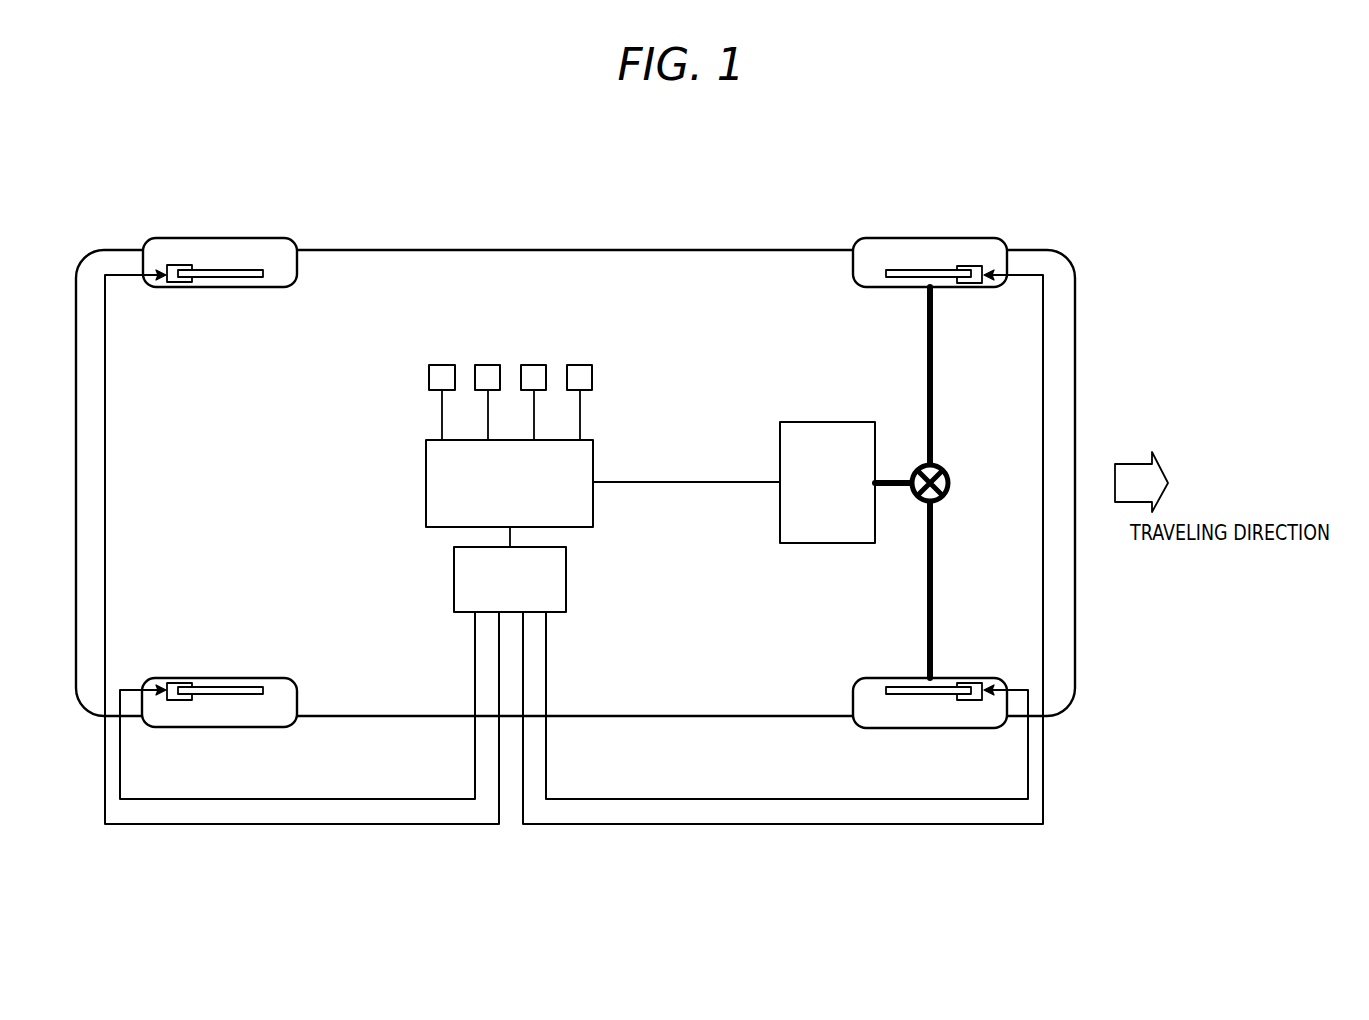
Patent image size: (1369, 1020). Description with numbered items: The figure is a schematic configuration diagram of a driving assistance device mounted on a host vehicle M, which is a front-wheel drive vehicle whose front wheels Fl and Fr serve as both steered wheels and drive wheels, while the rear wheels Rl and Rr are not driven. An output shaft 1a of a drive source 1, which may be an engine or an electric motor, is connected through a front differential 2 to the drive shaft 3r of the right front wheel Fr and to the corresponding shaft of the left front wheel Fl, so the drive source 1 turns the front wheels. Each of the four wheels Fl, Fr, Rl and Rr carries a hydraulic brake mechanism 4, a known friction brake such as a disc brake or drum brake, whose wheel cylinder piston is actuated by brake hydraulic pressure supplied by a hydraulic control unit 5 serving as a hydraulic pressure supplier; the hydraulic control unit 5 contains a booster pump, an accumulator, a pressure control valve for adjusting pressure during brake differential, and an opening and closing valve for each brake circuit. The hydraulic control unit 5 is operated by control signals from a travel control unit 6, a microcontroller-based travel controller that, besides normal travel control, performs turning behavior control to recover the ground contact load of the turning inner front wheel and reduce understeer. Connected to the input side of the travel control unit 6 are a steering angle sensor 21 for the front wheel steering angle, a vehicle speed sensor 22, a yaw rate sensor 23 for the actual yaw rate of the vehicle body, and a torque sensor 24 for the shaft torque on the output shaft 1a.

The host vehicle M is at (700, 249).
The left rear wheel Rl is at (222, 236).
The left front wheel Fl is at (930, 236).
The right rear wheel Rr is at (222, 729).
The right front wheel Fr is at (930, 730).
The hydraulic brake mechanism 4 is at (183, 288).
The drive shaft 3r is at (926, 370).
The output shaft 1a is at (903, 478).
The front differential 2 is at (945, 470).
The drive source 1 is at (826, 420).
The steering angle sensor 21 is at (443, 362).
The vehicle speed sensor 22 is at (489, 362).
The yaw rate sensor 23 is at (535, 362).
The torque sensor 24 is at (581, 362).
The travel control unit 6 is at (443, 528).
The hydraulic control unit 5 is at (568, 577).